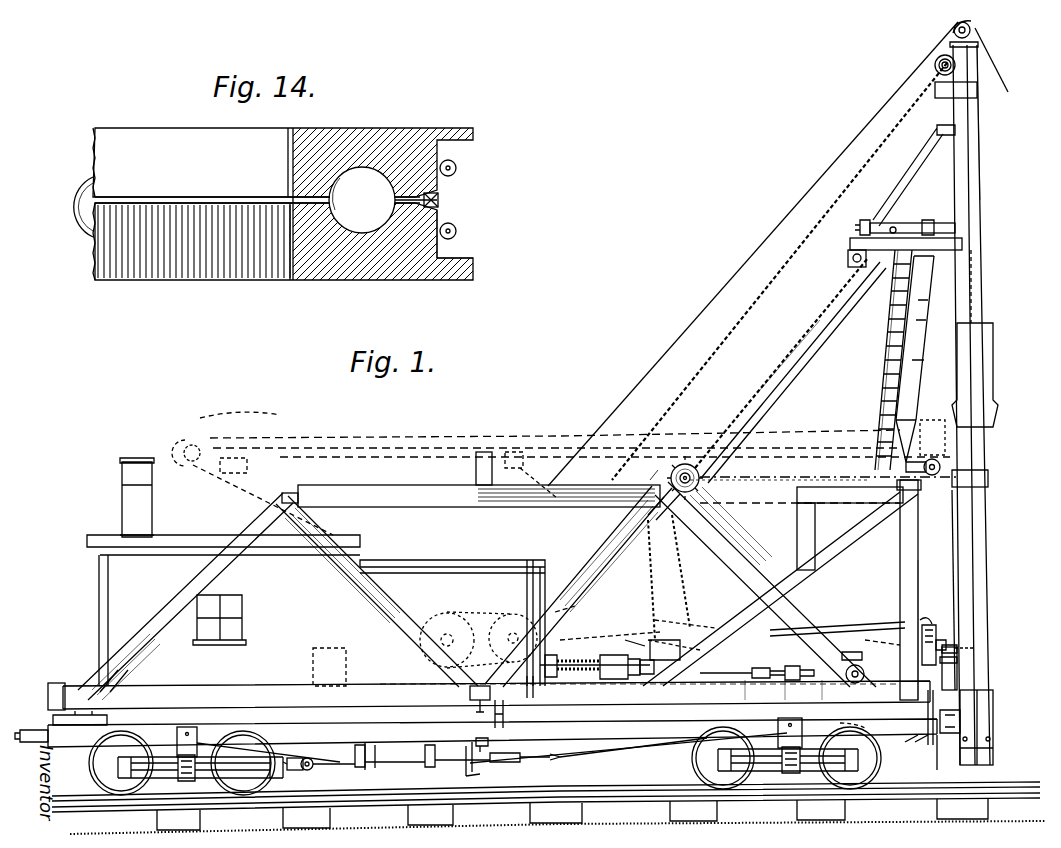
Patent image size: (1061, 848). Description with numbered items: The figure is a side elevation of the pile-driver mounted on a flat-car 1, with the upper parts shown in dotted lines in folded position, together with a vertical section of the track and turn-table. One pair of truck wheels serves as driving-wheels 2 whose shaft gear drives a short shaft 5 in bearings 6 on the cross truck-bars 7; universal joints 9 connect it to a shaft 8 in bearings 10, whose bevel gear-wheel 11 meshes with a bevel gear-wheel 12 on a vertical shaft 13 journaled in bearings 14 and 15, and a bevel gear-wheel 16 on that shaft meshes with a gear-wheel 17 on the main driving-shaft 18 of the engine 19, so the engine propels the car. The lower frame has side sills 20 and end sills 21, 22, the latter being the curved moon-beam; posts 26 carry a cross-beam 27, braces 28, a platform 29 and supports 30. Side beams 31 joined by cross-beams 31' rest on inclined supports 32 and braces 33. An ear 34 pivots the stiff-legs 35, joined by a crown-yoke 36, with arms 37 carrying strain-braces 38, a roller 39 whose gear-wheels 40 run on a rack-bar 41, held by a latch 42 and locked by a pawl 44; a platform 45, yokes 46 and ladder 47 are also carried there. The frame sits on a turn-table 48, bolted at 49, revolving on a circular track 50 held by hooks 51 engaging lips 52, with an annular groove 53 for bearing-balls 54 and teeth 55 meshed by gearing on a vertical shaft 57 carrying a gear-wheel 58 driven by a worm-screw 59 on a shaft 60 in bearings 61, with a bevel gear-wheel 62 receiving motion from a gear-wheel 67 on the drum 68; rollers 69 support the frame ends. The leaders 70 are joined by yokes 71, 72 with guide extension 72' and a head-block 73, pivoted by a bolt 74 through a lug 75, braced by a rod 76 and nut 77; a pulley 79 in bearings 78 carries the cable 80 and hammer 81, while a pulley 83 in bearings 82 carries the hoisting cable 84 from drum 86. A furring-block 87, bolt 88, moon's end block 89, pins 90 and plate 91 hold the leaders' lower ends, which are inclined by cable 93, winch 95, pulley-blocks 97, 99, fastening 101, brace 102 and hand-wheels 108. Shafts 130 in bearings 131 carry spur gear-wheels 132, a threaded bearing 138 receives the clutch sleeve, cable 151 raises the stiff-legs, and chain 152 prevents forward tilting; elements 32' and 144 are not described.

In FIG. 1, the flat-car 1 is at (476, 714).
In FIG. 1, the driving-wheels 2 is at (270, 772).
In FIG. 1, the short shaft 5 is at (310, 766).
In FIG. 1, the bearings 6 is at (297, 758).
In FIG. 1, the cross truck-bars 7 is at (276, 760).
In FIG. 1, the shaft 8 is at (380, 764).
In FIG. 1, the knuckle or universal joints 9 is at (318, 760).
In FIG. 1, the bearings 10 is at (366, 750).
In FIG. 1, the bevel gear-wheel 11 is at (474, 766).
In FIG. 1, the bevel gear-wheel 12 is at (492, 756).
In FIG. 1, the vertical shaft 13 is at (505, 706).
In FIG. 1, the bearing 14 is at (465, 698).
In FIG. 1, the bearing 15 is at (489, 739).
In FIG. 1, the bevel gear-wheel 16 is at (532, 690).
In FIG. 1, the bevel gear-wheel 17 is at (475, 634).
In FIG. 1, the main driving-shaft 18 is at (497, 613).
In FIG. 1, the engine 19 is at (316, 572).
In FIG. 1, the side sills 20 is at (197, 694).
In FIG. 1, the end sill 21 is at (57, 684).
In FIG. 1, the end sill (moon-beam) 22 is at (958, 681).
In FIG. 1, the posts 26 is at (919, 562).
In FIG. 1, the cross-beam 27 is at (919, 498).
In FIG. 1, the braces 28 is at (822, 566).
In FIG. 1, the platform 29 is at (850, 508).
In FIG. 1, the supports 30 is at (799, 527).
In FIG. 1, the side beams 31 is at (566, 473).
In FIG. 1, the cross-beams 31' is at (489, 449).
In FIG. 1, the inclined supports 32 is at (185, 596).
In FIG. 1, the chain 32' is at (672, 580).
In FIG. 1, the braces 33 is at (342, 578).
In FIG. 1, the ear 34 is at (923, 442).
In FIG. 1, the stiff-legs 35 is at (919, 382).
In FIG. 1, the crown-yoke 36 is at (966, 246).
In FIG. 1, the arms 37 is at (866, 262).
In FIG. 1, the strain-braces 38 is at (766, 393).
In FIG. 1, the drum or roller 39 is at (710, 478).
In FIG. 1, the gear-wheel 40 is at (716, 462).
In FIG. 1, the rack-bar 41 is at (730, 547).
In FIG. 1, the hook or latch 42 is at (664, 509).
In FIG. 1, the pawl or dog 44 is at (691, 463).
In FIG. 1, the platform 45 is at (894, 227).
In FIG. 1, the yokes 46 is at (884, 343).
In FIG. 1, the ladder 47 is at (887, 311).
In FIG. 14, the turn-table or carriage 48 is at (474, 229).
In FIG. 1, the turn-table or carriage 48 is at (640, 694).
In FIG. 14, the bolts 49 is at (454, 166).
In FIG. 14, the circular track 50 is at (330, 268).
In FIG. 1, the circular track 50 is at (638, 719).
In FIG. 14, the hooks 51 is at (440, 204).
In FIG. 14, the lips 52 is at (440, 196).
In FIG. 14, the annular groove 53 is at (372, 170).
In FIG. 14, the bearing-balls 54 is at (67, 222).
In FIG. 14, the teeth 55 is at (203, 268).
In FIG. 1, the vertical shaft 57 is at (595, 685).
In FIG. 1, the second gear-wheel 58 is at (581, 640).
In FIG. 1, the worm-screw 59 is at (578, 654).
In FIG. 1, the shaft 60 is at (754, 668).
In FIG. 1, the bearings 61 is at (608, 668).
In FIG. 1, the bevel gear-wheel 62 is at (560, 649).
In FIG. 1, the gear-wheel 67 is at (576, 607).
In FIG. 1, the drum 68 is at (529, 600).
In FIG. 1, the rollers 69 is at (125, 692).
In FIG. 1, the leaders 70 is at (986, 464).
In FIG. 1, the yokes 71 is at (936, 92).
In FIG. 1, the yoke 72 is at (978, 403).
In FIG. 1, the extension (guide) 72' is at (993, 122).
In FIG. 1, the head-block 73 is at (978, 45).
In FIG. 1, the bolt 74 is at (929, 222).
In FIG. 1, the perforated lug 75 is at (870, 231).
In FIG. 1, the rod 76 is at (912, 159).
In FIG. 1, the nut 77 is at (862, 222).
In FIG. 1, the bearings 78 is at (938, 69).
In FIG. 1, the pulley 79 is at (935, 62).
In FIG. 1, the cable or line 80 is at (778, 271).
In FIG. 1, the hammer or monkey 81 is at (986, 373).
In FIG. 1, the bearings 82 is at (952, 33).
In FIG. 1, the pulley 83 is at (971, 30).
In FIG. 1, the cable or line 84 is at (750, 256).
In FIG. 1, the drum 86 is at (973, 287).
In FIG. 1, the furring-block 87 is at (957, 605).
In FIG. 1, the bolt 88 is at (976, 650).
In FIG. 1, the moon's end block 89 is at (960, 645).
In FIG. 1, the pins 90 is at (938, 640).
In FIG. 1, the plate 91 is at (960, 661).
In FIG. 1, the cable or line 93 is at (870, 642).
In FIG. 1, the winch or windlass 95 is at (626, 640).
In FIG. 1, the pulley-block 97 is at (922, 628).
In FIG. 1, the pulley-block 99 is at (926, 622).
In FIG. 1, the fastening point 101 is at (858, 657).
In FIG. 1, the brace 102 is at (606, 655).
In FIG. 1, the hand-wheels 108 is at (682, 600).
In FIG. 1, the vertical shafts 130 is at (858, 670).
In FIG. 1, the bearings 131 is at (823, 689).
In FIG. 1, the spur gear-wheel 132 is at (667, 737).
In FIG. 1, the internally-screw-threaded bearing 138 is at (787, 689).
In FIG. 1, the rod 144 is at (800, 625).
In FIG. 1, the cable 151 is at (658, 614).
In FIG. 1, the chain 152 is at (797, 329).